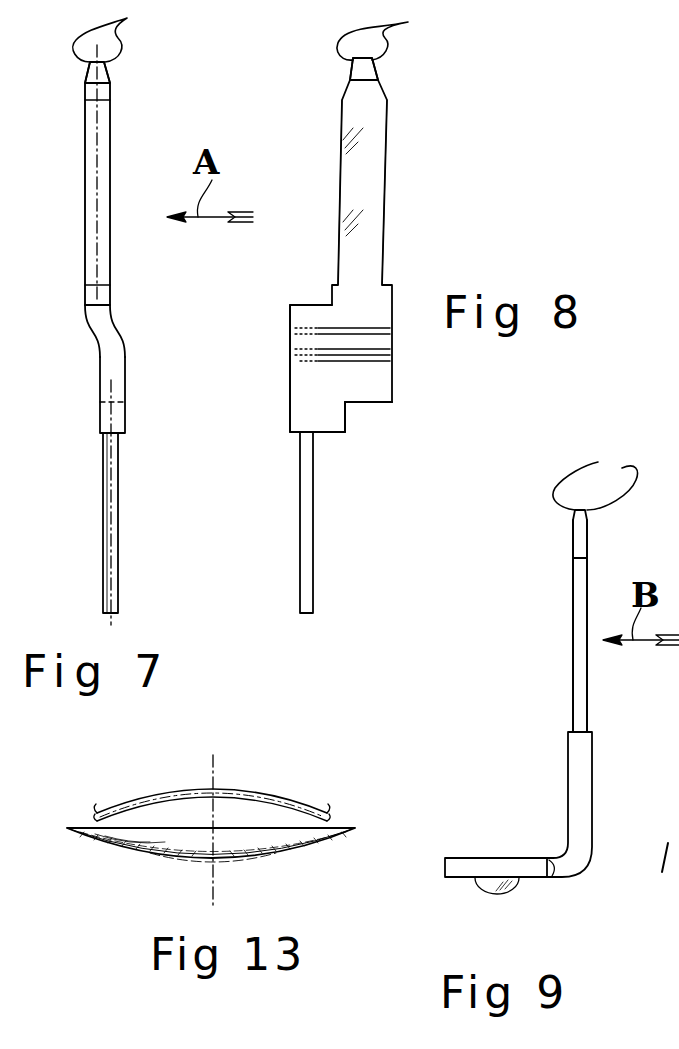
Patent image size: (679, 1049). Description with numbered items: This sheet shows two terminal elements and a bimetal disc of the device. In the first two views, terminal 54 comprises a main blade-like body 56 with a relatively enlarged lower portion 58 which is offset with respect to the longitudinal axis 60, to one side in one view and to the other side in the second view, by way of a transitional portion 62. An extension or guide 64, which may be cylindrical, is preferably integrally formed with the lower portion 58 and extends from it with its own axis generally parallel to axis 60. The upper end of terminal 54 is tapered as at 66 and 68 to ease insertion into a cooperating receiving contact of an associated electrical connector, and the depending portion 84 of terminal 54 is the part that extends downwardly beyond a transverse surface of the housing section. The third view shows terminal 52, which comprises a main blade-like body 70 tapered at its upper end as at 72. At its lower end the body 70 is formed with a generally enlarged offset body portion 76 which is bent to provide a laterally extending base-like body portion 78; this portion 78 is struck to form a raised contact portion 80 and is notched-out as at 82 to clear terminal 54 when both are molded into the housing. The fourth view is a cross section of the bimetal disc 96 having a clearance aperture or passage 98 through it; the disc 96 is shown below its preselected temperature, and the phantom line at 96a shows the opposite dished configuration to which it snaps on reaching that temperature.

In FIG. 9, the terminal 52 is at (556, 679).
In FIG. 7, the terminal 54 is at (146, 139).
In FIG. 8, the terminal 54 is at (412, 199).
In FIG. 7, the main blade-like body 56 is at (100, 253).
In FIG. 8, the main blade-like body 56 is at (373, 227).
In FIG. 7, the enlarged lower portion 58 is at (126, 384).
In FIG. 8, the enlarged lower portion 58 is at (357, 364).
In FIG. 7, the longitudinal axis 60 is at (108, 112).
In FIG. 8, the longitudinal axis 60 is at (365, 255).
In FIG. 7, the transitional portion 62 is at (103, 348).
In FIG. 7, the extension or guide 64 is at (120, 528).
In FIG. 8, the extension or guide 64 is at (316, 520).
In FIG. 7, the tapered upper end 66 is at (120, 32).
In FIG. 8, the tapered upper end 68 is at (393, 32).
In FIG. 9, the main blade-like body 70 is at (588, 703).
In FIG. 9, the tapered upper end 72 is at (595, 479).
In FIG. 9, the enlarged offset body portion 76 is at (594, 810).
In FIG. 9, the laterally extending base-like body portion 78 is at (445, 868).
In FIG. 9, the raised contact portion 80 is at (490, 886).
In FIG. 9, the notch 82 is at (555, 877).
In FIG. 8, the depending portion 84 is at (348, 415).
In FIG. 13, the bimetal disc 96 is at (287, 852).
In FIG. 13, the bimetal disc in opposite dished configuration 96a is at (240, 798).
In FIG. 13, the clearance aperture or passage 98 is at (201, 860).